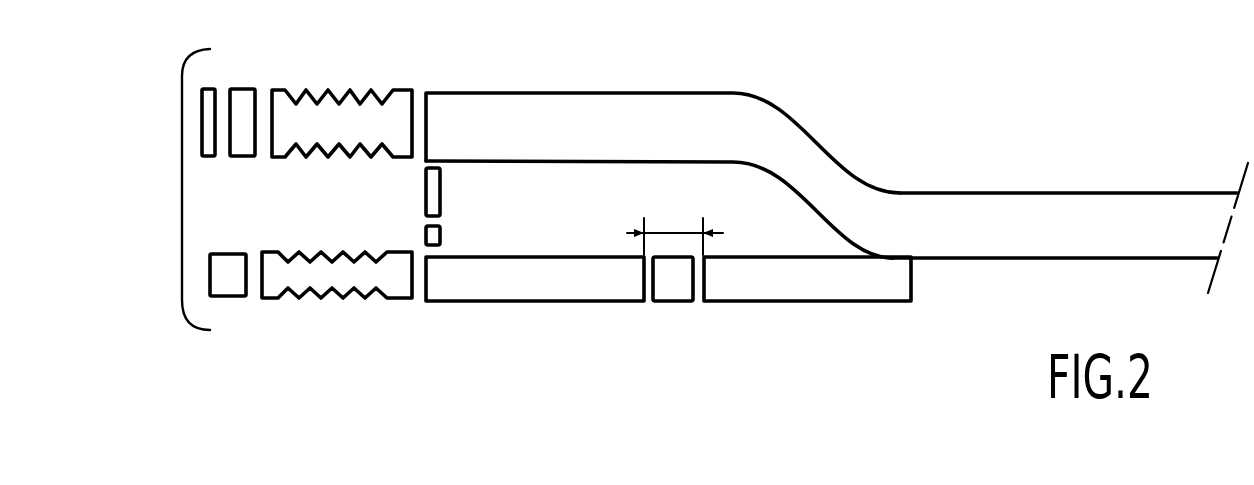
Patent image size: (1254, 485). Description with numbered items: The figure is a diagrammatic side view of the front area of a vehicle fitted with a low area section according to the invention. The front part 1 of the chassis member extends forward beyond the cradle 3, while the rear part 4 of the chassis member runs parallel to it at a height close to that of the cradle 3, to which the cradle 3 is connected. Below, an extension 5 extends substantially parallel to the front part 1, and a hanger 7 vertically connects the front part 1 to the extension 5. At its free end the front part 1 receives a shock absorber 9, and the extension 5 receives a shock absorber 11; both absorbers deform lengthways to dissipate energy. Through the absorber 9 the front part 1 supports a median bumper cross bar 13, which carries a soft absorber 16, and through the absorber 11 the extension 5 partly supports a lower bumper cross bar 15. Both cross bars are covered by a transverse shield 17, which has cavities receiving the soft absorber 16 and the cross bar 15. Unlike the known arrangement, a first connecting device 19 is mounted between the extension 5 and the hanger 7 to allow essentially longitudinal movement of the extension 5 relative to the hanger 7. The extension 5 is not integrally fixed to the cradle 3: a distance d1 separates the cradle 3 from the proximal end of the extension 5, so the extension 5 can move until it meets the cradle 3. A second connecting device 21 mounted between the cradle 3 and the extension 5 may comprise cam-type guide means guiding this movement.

The front part of the chassis member 1 is at (573, 92).
The cradle 3 is at (822, 304).
The rear part of the chassis member 4 is at (1075, 259).
The extension 5 is at (537, 303).
The hanger 7 is at (442, 193).
The shock absorber 9 is at (337, 92).
The shock absorber 11 is at (332, 300).
The median bumper cross bar 13 is at (242, 92).
The lower bumper cross bar 15 is at (233, 300).
The soft absorber 16 is at (206, 117).
The shield 17 is at (181, 75).
The first connecting device 19 is at (442, 238).
The second connecting device 21 is at (672, 303).
The distance d1 is at (675, 232).